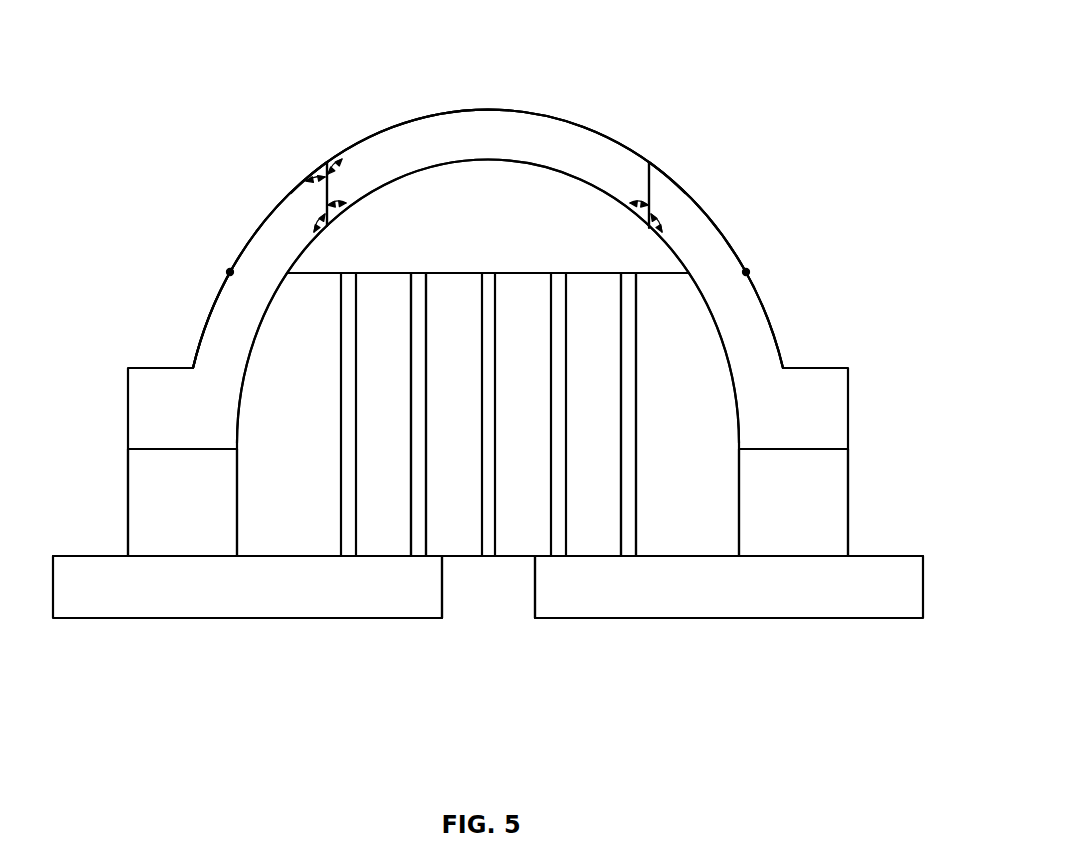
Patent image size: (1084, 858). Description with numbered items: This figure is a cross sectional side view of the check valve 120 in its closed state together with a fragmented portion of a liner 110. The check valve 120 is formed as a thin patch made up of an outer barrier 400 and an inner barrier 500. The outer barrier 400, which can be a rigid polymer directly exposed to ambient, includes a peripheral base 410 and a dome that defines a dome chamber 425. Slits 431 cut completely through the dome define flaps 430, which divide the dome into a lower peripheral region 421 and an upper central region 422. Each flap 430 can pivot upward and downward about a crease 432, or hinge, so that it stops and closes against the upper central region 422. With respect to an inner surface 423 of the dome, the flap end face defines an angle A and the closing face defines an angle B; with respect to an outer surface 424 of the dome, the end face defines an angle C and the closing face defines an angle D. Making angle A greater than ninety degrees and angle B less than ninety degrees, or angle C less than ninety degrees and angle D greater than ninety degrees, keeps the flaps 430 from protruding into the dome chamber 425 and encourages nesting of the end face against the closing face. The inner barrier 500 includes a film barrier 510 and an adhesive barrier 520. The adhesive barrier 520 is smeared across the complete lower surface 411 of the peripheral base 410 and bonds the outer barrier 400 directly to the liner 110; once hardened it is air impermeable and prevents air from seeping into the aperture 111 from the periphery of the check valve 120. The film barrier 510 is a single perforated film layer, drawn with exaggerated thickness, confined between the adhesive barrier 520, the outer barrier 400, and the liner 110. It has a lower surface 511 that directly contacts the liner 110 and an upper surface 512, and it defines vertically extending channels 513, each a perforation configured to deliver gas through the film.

The liner 110 is at (172, 620).
The aperture 111 is at (495, 650).
The check valve 120 is at (668, 78).
The outer barrier 400 is at (770, 230).
The peripheral base 410 is at (146, 367).
The lower surface of peripheral base 411 is at (157, 449).
The lower peripheral region 421 is at (195, 340).
The upper central region 422 is at (489, 102).
The inner surface of dome 423 is at (486, 164).
The outer surface of dome 424 is at (324, 160).
The dome chamber 425 is at (543, 203).
The flap 430 is at (291, 193).
The slit 431 is at (329, 188).
The crease 432 is at (229, 272).
The inner barrier 500 is at (870, 518).
The film barrier 510 is at (507, 562).
The lower surface of film barrier 511 is at (463, 558).
The upper surface of film barrier 512 is at (585, 272).
The channel 513 is at (442, 452).
The adhesive barrier 520 is at (163, 514).
The angle A is at (313, 228).
The angle B is at (347, 201).
The angle C is at (310, 183).
The angle D is at (343, 164).